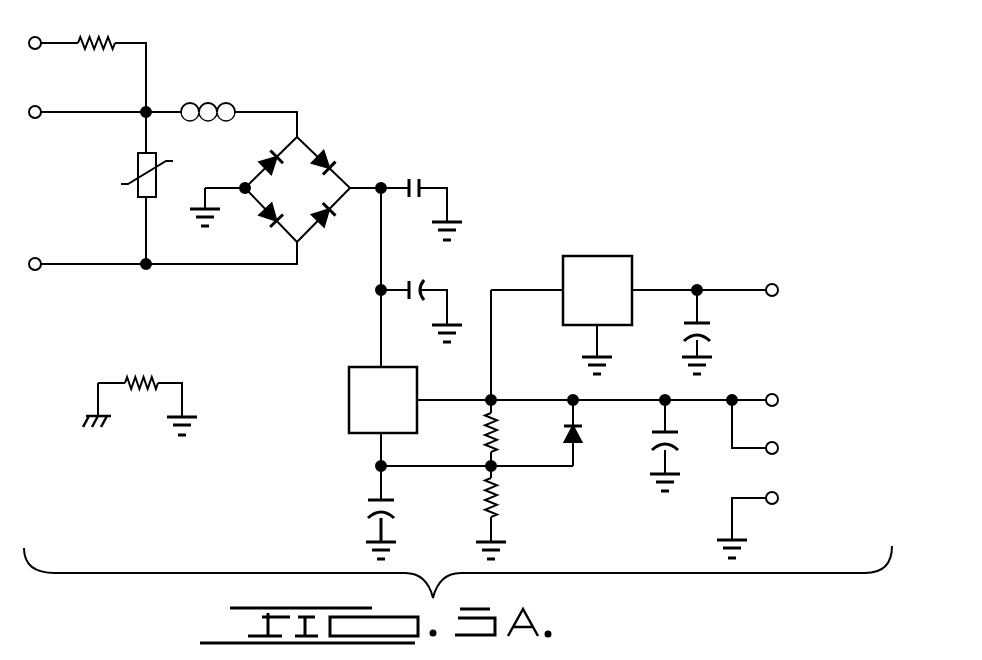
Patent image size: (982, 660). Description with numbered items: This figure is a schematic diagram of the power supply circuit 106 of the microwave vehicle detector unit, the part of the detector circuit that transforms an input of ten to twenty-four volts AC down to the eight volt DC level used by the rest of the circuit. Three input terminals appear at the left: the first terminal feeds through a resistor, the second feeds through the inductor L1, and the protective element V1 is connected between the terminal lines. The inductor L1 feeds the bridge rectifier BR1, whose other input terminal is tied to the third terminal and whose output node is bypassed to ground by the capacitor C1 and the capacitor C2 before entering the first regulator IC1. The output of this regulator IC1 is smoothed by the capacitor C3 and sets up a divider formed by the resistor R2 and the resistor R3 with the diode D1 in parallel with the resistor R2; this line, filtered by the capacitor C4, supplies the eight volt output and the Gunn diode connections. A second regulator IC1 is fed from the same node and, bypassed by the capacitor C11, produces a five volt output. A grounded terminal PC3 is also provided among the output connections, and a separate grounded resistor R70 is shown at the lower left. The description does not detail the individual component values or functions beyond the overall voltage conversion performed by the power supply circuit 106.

The power supply circuit 106 is at (489, 99).
The inductor L1 is at (236, 102).
The varistor V1 is at (136, 175).
The bridge rectifier BR1 is at (285, 189).
The capacitor C1 is at (421, 198).
The capacitor C2 is at (421, 297).
The voltage regulator IC1 is at (557, 361).
The capacitor C11 is at (720, 332).
The resistor R2 is at (468, 439).
The resistor R3 is at (473, 512).
The diode D1 is at (588, 434).
The capacitor C3 is at (361, 512).
The capacitor C4 is at (680, 457).
The photocell connection PC3 is at (770, 525).
The resistor R70 is at (140, 392).